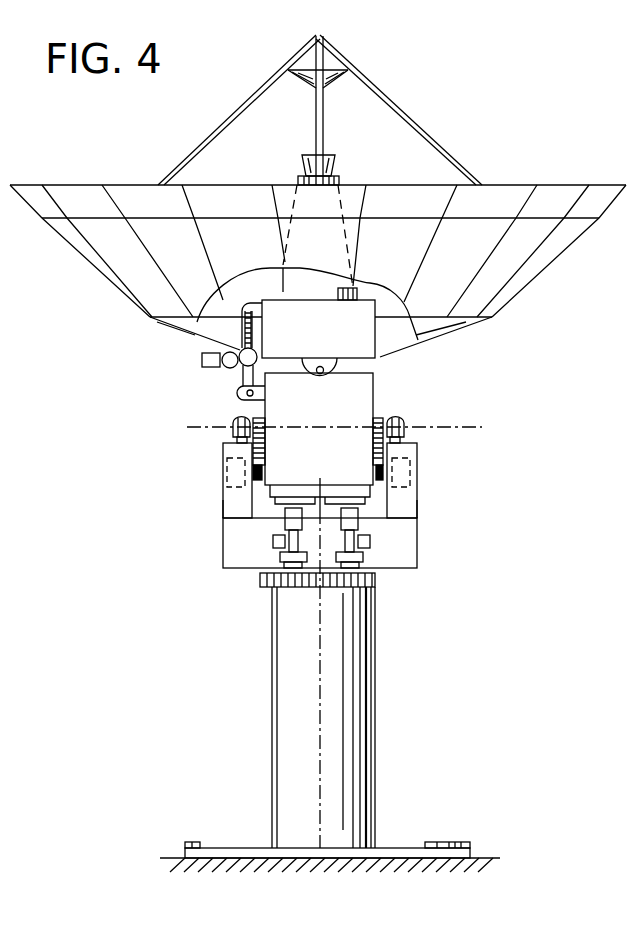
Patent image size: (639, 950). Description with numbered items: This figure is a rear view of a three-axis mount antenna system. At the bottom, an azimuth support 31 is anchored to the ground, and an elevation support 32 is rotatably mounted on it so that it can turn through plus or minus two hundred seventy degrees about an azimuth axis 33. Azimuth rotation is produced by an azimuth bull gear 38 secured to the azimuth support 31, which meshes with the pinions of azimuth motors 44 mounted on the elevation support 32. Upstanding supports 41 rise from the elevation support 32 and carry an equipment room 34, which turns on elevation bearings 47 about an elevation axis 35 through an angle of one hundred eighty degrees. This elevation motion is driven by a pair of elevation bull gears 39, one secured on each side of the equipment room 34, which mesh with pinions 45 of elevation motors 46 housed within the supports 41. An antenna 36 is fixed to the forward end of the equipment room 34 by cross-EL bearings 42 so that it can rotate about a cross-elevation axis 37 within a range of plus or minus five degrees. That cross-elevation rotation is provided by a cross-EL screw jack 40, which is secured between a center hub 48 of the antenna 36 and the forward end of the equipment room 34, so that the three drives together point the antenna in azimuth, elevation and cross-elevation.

The azimuth support 31 is at (374, 713).
The elevation support 32 is at (408, 545).
The azimuth (AZ) axis 33 is at (324, 665).
The equipment room 34 is at (272, 407).
The elevation (EL) axis 35 is at (460, 427).
The antenna 36 is at (520, 293).
The cross-elevation (XEL) axis 37 is at (321, 375).
The azimuth bull gear 38 is at (263, 583).
The elevation bull gears 39 is at (265, 455).
The cross-EL screw jack 40 is at (240, 374).
The upstanding supports 41 is at (223, 507).
The cross-EL bearings 42 is at (380, 368).
The azimuth motors 44 is at (280, 556).
The pinions 45 is at (252, 487).
The elevation (EL) motors 46 is at (227, 473).
The elevation bearings 47 is at (233, 420).
The center hub 48 is at (364, 310).